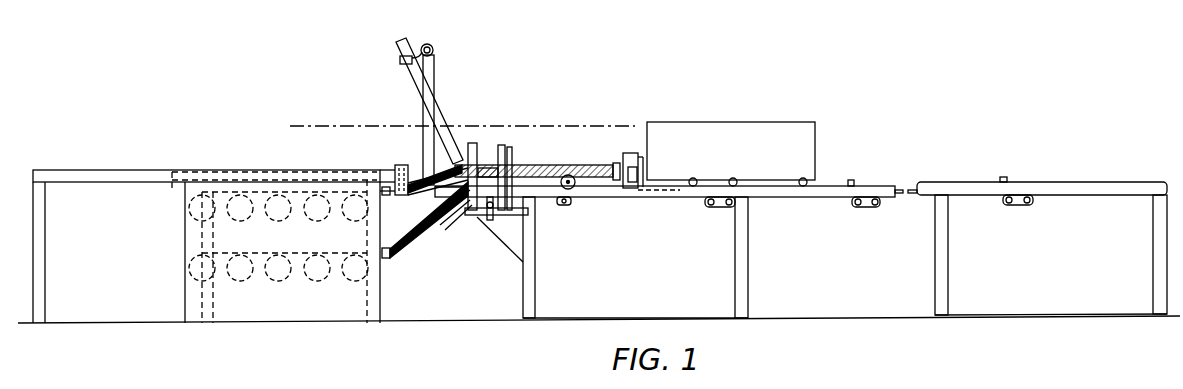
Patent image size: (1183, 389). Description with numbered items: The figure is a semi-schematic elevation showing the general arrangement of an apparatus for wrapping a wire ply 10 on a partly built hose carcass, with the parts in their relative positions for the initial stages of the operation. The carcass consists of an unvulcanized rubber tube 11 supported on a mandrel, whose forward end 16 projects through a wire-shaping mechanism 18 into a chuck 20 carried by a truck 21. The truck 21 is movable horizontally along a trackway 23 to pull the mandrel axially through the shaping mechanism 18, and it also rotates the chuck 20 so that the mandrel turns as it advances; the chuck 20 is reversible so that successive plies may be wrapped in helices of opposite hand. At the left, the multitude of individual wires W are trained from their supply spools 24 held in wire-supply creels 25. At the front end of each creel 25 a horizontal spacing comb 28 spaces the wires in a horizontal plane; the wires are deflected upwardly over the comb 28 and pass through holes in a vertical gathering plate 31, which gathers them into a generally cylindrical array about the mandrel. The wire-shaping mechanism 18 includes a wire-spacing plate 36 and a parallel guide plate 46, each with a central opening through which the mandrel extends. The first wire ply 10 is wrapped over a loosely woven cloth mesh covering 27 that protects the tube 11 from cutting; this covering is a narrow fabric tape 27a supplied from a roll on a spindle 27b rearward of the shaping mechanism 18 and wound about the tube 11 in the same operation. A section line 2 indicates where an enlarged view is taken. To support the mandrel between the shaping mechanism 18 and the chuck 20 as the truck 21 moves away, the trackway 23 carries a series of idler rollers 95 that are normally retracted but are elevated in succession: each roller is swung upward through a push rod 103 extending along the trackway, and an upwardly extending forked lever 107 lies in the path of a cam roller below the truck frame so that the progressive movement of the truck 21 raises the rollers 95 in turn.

The section line 2— 2 is at (302, 140).
The wire ply 10 is at (608, 164).
The unvulcanized rubber tube 11 is at (388, 168).
The forward end of the mandrel 16 is at (634, 196).
The wire-shaping mechanism 18 is at (488, 118).
The chuck 20 is at (636, 158).
The truck 21 is at (790, 112).
The trackway 23 is at (955, 182).
The supply spools 24 is at (232, 217).
The wire-supply creels 25 is at (242, 160).
The cloth mesh covering 27 is at (483, 143).
The fabric tape 27a is at (402, 38).
The spindle 27b is at (431, 55).
The horizontal spacing comb 28 is at (386, 248).
The vertical gathering plate 31 is at (466, 213).
The wire-spacing plate 36 is at (517, 143).
The guide plate 46 is at (522, 152).
The idler rollers 95 is at (575, 185).
The push rod 103 is at (915, 185).
The forked lever 107 is at (856, 179).
The wires W is at (417, 192).